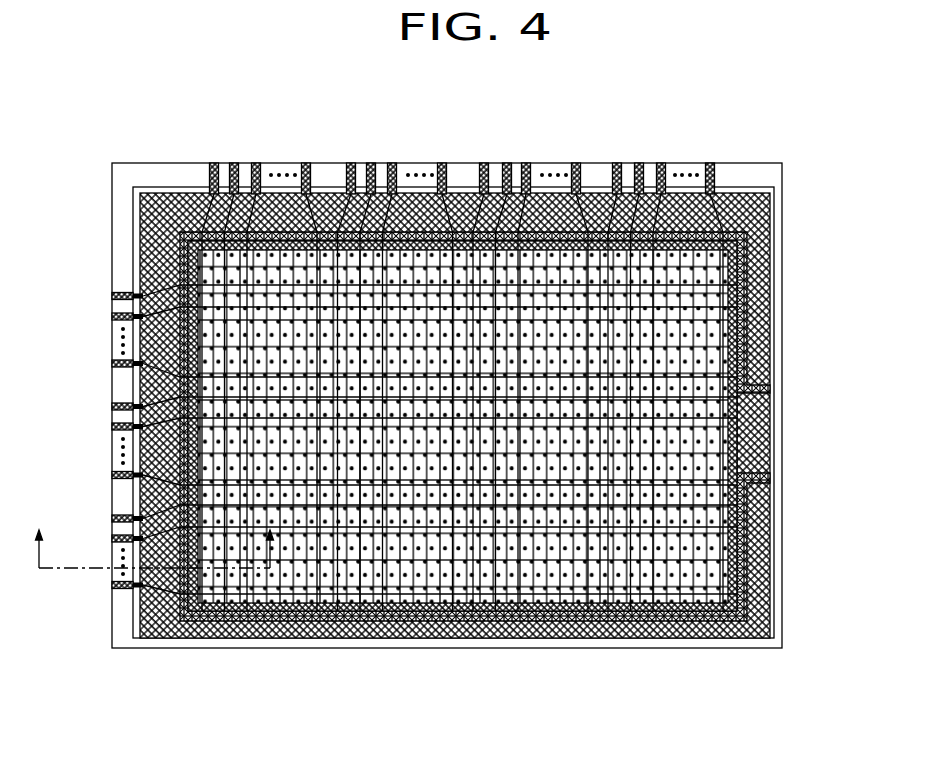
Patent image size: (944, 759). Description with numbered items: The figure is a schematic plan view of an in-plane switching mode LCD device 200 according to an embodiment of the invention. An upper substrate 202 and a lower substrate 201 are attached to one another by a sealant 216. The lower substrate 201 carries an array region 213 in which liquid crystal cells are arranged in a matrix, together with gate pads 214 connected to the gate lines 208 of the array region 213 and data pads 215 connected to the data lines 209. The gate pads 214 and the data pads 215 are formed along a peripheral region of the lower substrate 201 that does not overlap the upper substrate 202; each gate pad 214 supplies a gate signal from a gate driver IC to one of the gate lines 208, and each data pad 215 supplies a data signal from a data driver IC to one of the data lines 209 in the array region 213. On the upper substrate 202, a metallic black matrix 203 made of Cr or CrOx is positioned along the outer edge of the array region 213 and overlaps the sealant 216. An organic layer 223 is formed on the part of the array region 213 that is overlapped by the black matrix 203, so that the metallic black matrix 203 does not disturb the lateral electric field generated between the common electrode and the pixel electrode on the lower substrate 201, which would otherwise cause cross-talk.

The liquid crystal display panel 200 is at (130, 148).
The lower substrate 201 is at (751, 162).
The upper substrate 202 is at (777, 187).
The black matrix 203 is at (772, 237).
The gate lines 208 is at (685, 483).
The data lines 209 is at (653, 562).
The array region 213 is at (437, 352).
The gate pads 214 is at (92, 595).
The data pads 215 is at (720, 145).
The sealant 216 is at (747, 320).
The organic layer 223 is at (433, 570).